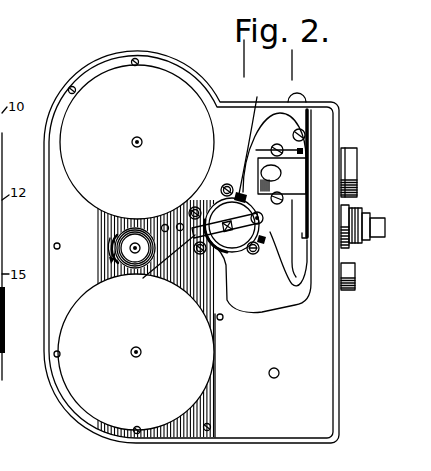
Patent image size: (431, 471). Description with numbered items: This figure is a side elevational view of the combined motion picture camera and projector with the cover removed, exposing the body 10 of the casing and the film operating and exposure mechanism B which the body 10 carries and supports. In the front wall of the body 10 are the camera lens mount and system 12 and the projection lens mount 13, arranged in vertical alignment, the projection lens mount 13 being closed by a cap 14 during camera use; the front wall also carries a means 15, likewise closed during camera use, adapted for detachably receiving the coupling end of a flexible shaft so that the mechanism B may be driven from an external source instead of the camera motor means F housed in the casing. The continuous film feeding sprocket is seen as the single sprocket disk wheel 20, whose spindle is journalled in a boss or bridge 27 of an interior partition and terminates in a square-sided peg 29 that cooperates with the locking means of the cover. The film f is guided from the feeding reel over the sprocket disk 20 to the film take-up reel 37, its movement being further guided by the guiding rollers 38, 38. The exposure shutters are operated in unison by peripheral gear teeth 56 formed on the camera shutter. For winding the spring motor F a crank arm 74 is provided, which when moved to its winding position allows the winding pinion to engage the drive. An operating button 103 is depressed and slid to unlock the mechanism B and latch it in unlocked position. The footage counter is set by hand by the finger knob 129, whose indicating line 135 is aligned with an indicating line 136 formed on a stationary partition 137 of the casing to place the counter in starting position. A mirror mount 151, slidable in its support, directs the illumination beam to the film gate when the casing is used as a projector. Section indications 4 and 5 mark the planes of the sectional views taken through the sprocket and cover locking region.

The body 10 is at (334, 104).
The camera lens mount and system 12 is at (363, 212).
The projection lens mount 13 is at (344, 151).
The cap 14 is at (358, 160).
The means for receiving flexible shaft coupling 15 is at (356, 278).
The sprocket disk wheel 20 is at (246, 252).
The boss or bridge 27 is at (282, 176).
The square-sided peg 29 is at (227, 236).
The film take-up reel 37 is at (92, 388).
The guiding rollers 38 is at (222, 189).
The peripheral gear teeth 56 is at (158, 80).
The crank arm 74 is at (2, 382).
The operating button 103 is at (307, 93).
The finger knob 129 is at (146, 228).
The indicating line 135 is at (135, 243).
The indicating line 136 is at (121, 226).
The stationary partition 137 is at (72, 264).
The mirror mount 151 is at (282, 168).
The film operating and exposure mechanism B is at (248, 181).
The camera motor means F is at (320, 370).
The film f is at (247, 139).
The section line 4- 4 is at (402, 240).
The section line 5- 5 is at (228, 112).